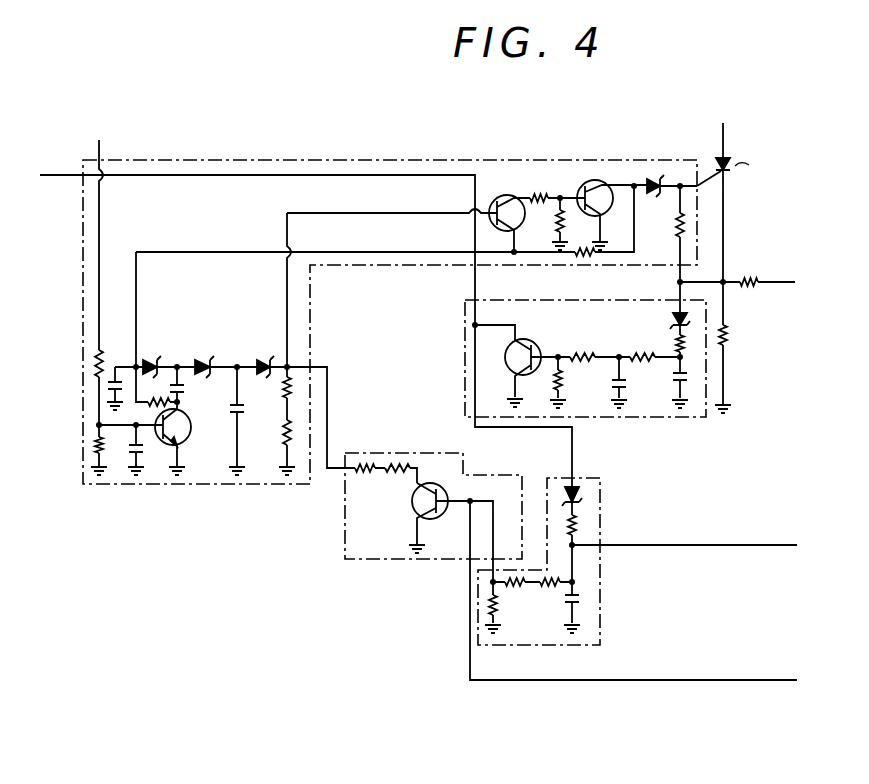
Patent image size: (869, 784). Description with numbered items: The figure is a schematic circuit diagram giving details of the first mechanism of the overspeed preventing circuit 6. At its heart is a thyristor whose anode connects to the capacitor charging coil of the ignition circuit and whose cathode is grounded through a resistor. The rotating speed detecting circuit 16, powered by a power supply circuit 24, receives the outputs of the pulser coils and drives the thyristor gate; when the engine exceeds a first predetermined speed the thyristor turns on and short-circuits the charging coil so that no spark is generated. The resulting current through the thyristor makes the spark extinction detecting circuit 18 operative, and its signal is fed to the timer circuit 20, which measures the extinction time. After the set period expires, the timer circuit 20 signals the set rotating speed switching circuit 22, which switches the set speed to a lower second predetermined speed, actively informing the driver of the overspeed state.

The overspeed preventing circuit 6 is at (352, 110).
The rotating speed detecting circuit 16 is at (272, 160).
The spark extinction detecting circuit 18 is at (650, 420).
The timer circuit 20 is at (603, 578).
The set rotating speed switching circuit 22 is at (345, 543).
The power supply circuit 24 is at (57, 206).